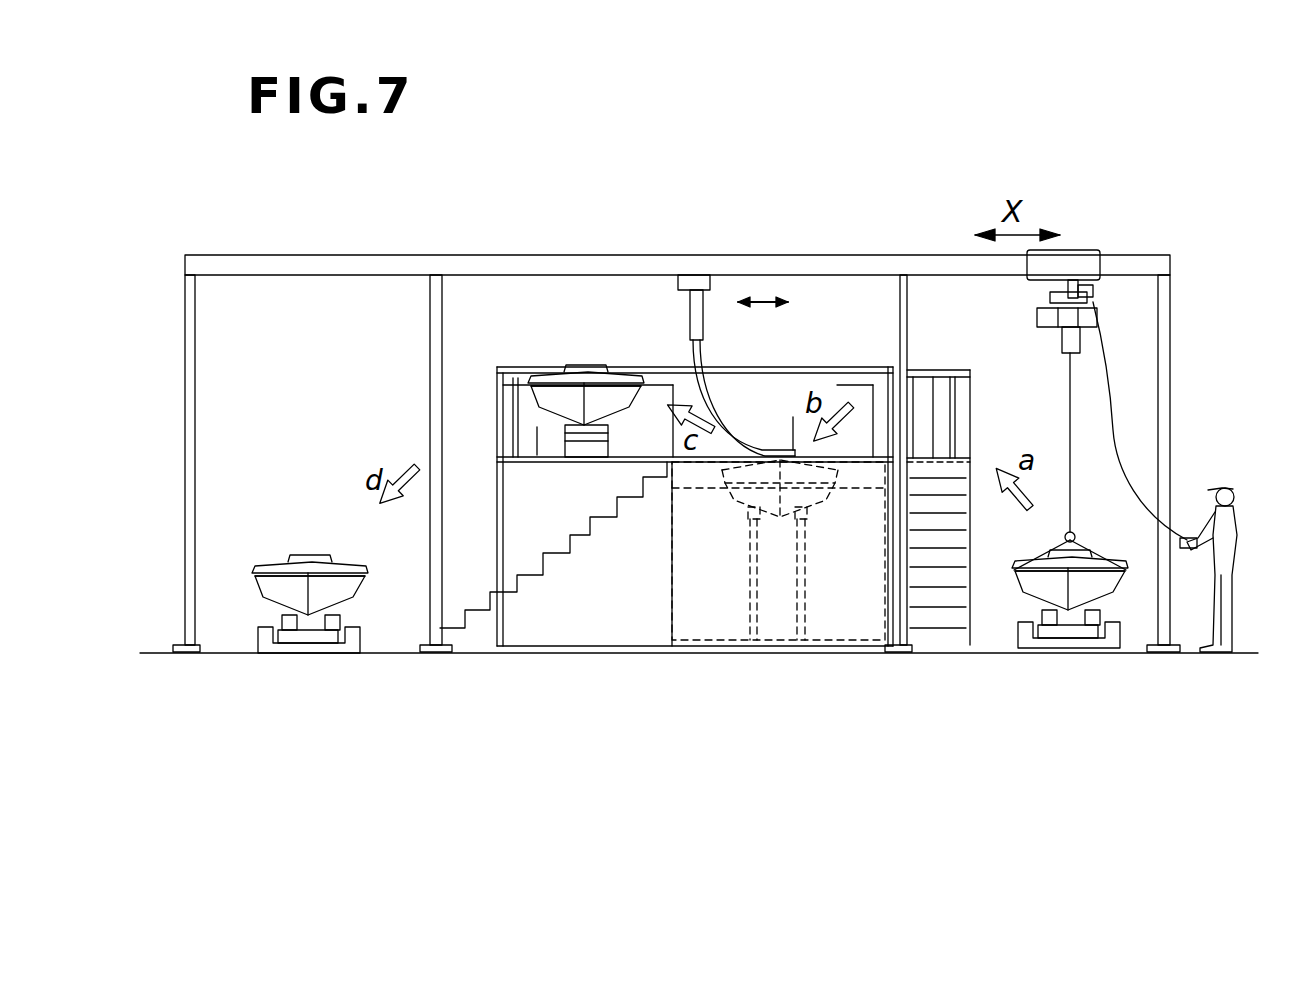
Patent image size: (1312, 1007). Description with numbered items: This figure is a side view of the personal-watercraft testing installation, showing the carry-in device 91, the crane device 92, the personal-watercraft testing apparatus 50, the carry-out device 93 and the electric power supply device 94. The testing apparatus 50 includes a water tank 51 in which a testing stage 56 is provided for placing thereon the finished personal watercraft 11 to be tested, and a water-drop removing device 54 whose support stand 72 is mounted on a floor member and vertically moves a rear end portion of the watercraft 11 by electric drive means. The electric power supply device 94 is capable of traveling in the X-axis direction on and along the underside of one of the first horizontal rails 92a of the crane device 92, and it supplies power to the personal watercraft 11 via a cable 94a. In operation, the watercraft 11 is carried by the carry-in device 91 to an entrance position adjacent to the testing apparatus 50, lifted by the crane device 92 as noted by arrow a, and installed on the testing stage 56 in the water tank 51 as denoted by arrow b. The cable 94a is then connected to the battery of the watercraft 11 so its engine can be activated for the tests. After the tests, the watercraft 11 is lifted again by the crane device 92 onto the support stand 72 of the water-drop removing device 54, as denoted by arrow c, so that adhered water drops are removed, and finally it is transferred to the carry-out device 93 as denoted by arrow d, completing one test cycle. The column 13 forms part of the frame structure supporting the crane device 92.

The personal watercraft 11 is at (1125, 557).
The support column with ladder 13 is at (857, 378).
The personal-watercraft testing apparatus 50 is at (778, 412).
The water tank 51 is at (845, 655).
The water-drop removing device 54 is at (643, 372).
The testing stage 56 is at (750, 607).
The support stand 72 is at (565, 425).
The carry-in device 91 is at (1146, 502).
The crane device 92 is at (1125, 322).
The first horizontal rail 92a is at (1133, 256).
The carry-out device 93 is at (287, 530).
The electric power supply device 94 is at (693, 273).
The cable 94a is at (703, 357).